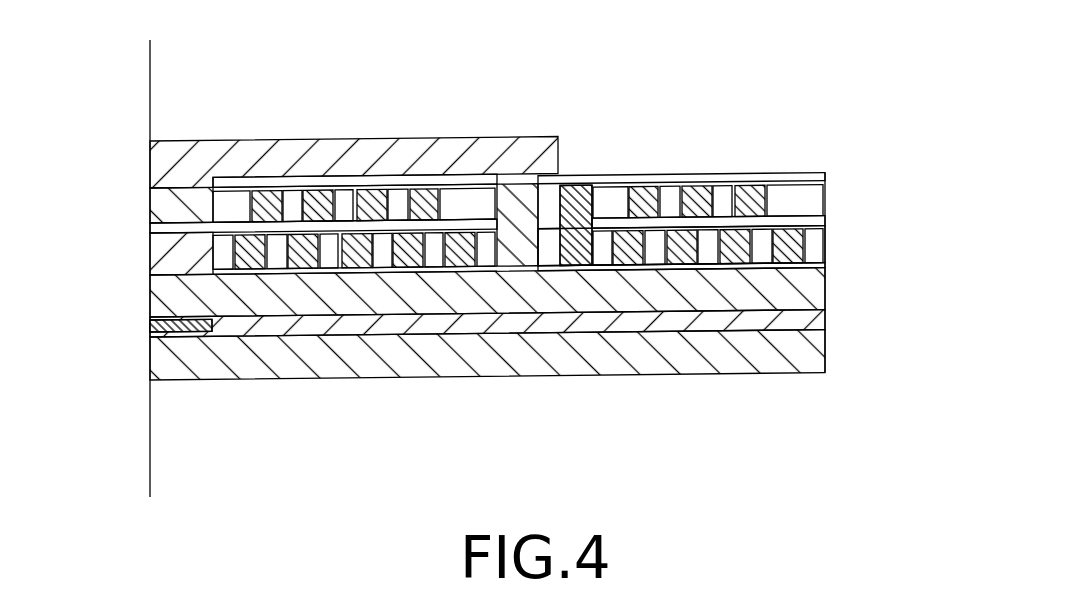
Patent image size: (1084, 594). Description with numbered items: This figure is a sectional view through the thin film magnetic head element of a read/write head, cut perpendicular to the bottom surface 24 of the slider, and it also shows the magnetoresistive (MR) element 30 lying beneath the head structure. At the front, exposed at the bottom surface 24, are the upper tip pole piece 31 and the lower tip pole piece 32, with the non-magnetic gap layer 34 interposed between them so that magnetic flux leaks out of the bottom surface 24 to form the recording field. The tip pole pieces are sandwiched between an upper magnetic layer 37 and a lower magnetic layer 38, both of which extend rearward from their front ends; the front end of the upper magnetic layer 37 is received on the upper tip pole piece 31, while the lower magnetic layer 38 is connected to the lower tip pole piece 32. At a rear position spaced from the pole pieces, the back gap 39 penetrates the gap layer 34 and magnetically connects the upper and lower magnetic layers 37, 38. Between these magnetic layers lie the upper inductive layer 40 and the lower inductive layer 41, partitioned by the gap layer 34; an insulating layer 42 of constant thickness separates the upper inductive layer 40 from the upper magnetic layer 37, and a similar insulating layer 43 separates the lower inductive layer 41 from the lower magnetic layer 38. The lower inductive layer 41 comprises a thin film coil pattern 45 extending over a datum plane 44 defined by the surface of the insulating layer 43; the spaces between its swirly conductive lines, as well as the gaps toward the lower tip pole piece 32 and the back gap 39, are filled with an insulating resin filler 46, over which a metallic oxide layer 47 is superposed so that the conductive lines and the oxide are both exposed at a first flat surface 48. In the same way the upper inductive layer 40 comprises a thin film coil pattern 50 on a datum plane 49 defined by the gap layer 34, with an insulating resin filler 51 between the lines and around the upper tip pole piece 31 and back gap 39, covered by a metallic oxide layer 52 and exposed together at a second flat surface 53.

The bottom surface 24 is at (150, 64).
The magnetoresistive (MR) element 30 is at (150, 328).
The upper tip pole piece 31 is at (150, 196).
The lower tip pole piece 32 is at (150, 268).
The gap layer 34 is at (150, 231).
The upper magnetic layer 37 is at (150, 155).
The lower magnetic layer 38 is at (150, 305).
The back gap 39 is at (575, 188).
The upper inductive layer 40 is at (827, 187).
The lower inductive layer 41 is at (827, 247).
The insulating layer 42 is at (460, 185).
The insulating layer 43 is at (255, 271).
The datum plane 44 is at (823, 262).
The thin film coil pattern 45 is at (470, 265).
The insulating resin filler 46 is at (386, 262).
The metallic oxide layer 47 is at (604, 232).
The first flat surface 48 is at (720, 232).
The datum plane 49 is at (824, 215).
The thin film coil pattern 50 is at (424, 184).
The insulating resin filler 51 is at (283, 183).
The metallic oxide layer 52 is at (230, 183).
The second flat surface 53 is at (674, 187).